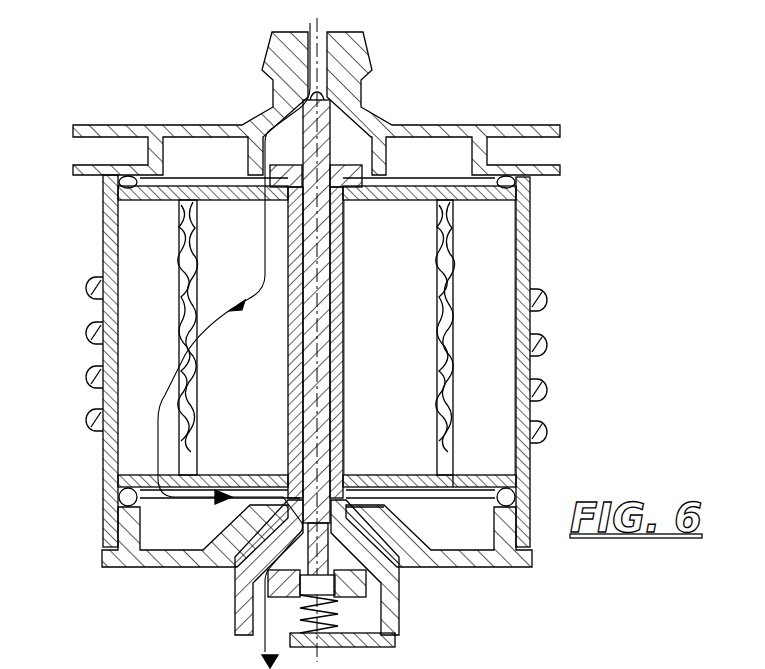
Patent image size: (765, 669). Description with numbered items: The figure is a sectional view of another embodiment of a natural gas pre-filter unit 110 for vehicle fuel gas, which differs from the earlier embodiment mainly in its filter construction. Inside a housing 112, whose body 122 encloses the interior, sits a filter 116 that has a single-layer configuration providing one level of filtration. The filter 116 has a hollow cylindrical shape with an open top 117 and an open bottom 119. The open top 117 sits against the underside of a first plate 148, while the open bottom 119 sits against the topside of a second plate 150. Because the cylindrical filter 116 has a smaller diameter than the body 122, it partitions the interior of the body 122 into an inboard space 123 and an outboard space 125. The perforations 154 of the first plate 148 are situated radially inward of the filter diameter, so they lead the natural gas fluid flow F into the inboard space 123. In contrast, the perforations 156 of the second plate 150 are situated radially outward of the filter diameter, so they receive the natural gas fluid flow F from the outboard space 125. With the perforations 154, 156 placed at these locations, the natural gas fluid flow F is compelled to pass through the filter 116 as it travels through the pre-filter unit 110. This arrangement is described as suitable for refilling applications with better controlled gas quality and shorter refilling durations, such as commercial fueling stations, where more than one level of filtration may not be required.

The pre-filter unit 110 is at (483, 98).
The housing 112 is at (92, 252).
The filter 116 is at (472, 257).
The open top 117 is at (198, 206).
The open bottom 119 is at (200, 475).
The body 122 is at (523, 218).
The inboard space 123 is at (381, 337).
The outboard space 125 is at (490, 337).
The first plate 148 is at (167, 197).
The second plate 150 is at (372, 475).
The perforations 154 is at (376, 197).
The perforations 156 is at (462, 478).
The natural gas fluid flow F is at (243, 304).